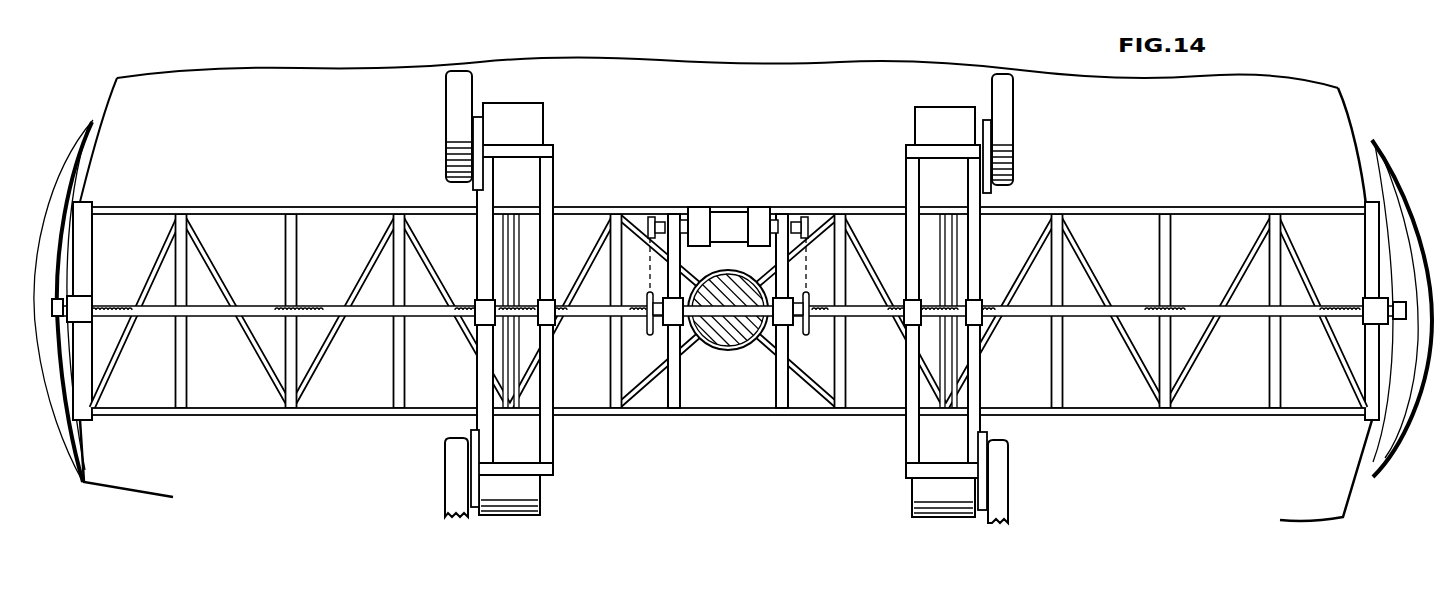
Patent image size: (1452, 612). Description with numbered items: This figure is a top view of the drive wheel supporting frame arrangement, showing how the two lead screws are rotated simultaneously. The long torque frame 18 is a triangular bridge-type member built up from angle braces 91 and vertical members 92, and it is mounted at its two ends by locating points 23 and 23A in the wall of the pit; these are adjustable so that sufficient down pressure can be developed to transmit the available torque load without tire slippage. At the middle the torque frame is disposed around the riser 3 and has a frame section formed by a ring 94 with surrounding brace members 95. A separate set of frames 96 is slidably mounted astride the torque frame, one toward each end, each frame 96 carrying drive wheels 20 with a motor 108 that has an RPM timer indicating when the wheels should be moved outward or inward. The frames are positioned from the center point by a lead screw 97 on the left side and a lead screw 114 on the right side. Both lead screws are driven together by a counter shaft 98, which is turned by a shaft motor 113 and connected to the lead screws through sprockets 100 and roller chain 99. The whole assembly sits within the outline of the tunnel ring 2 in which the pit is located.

The tunnel lining ring 2 is at (50, 350).
The riser 3 is at (718, 343).
The carriage truss 18 is at (747, 108).
The drive wheel 20 is at (446, 106).
The locating point 23 is at (1405, 298).
The locating point 23A is at (68, 293).
The angle brace 91 is at (1128, 348).
The vertical member 92 is at (1168, 275).
The ring 94 is at (730, 352).
The brace member 95 is at (662, 379).
The frame 96 is at (551, 195).
The lead screw 97 is at (305, 306).
The counter shaft 98 is at (661, 221).
The roller chain 99 is at (650, 286).
The sprocket 100 is at (650, 216).
The motor 108 is at (540, 113).
The shaft motor 113 is at (720, 211).
The lead screw 114 is at (1140, 306).